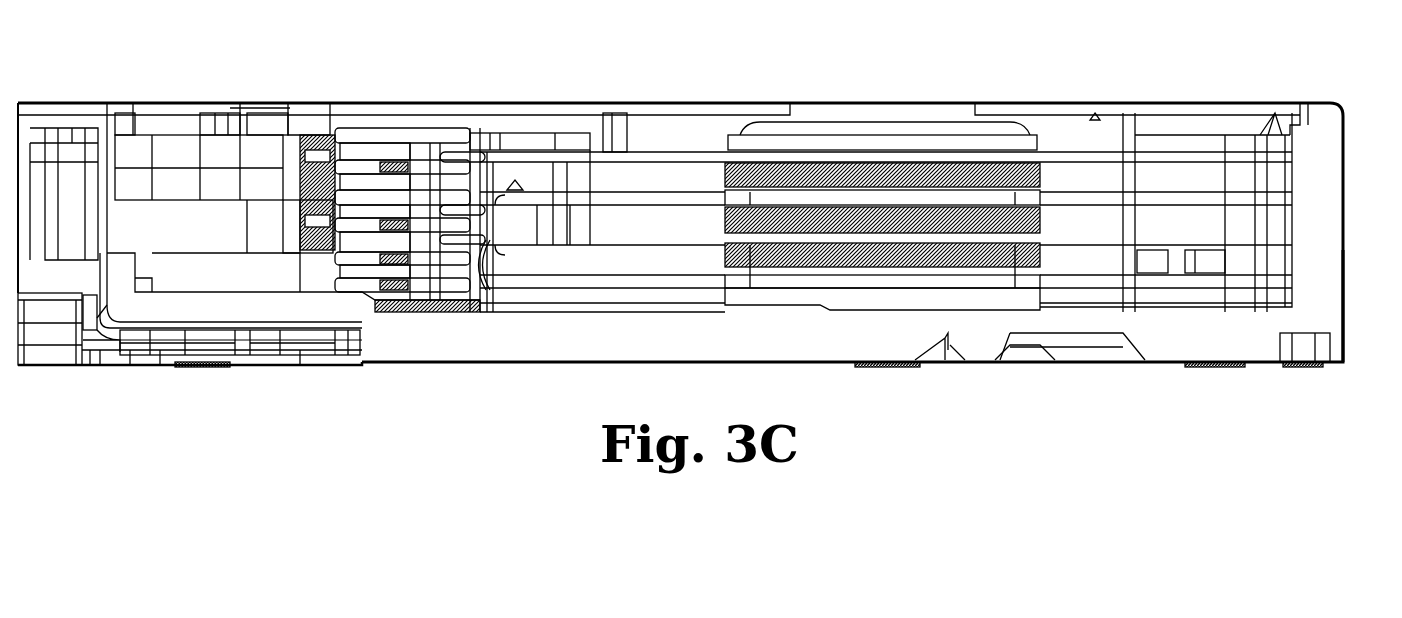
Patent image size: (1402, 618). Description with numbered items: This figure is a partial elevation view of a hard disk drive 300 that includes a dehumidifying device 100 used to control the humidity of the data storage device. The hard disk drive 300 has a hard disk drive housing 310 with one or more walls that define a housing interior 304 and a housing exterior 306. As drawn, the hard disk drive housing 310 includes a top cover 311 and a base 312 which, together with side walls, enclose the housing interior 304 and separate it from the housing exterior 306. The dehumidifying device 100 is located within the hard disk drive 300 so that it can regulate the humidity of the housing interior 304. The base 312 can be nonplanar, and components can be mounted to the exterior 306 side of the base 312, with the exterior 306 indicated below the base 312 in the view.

The hard disk drive 300 is at (1350, 175).
The housing interior 304 is at (538, 128).
The housing exterior 306 is at (416, 462).
The hard disk drive housing 310 is at (1348, 288).
The top cover 311 is at (707, 103).
The base 312 is at (132, 330).
The dehumidifying device 100 is at (216, 287).